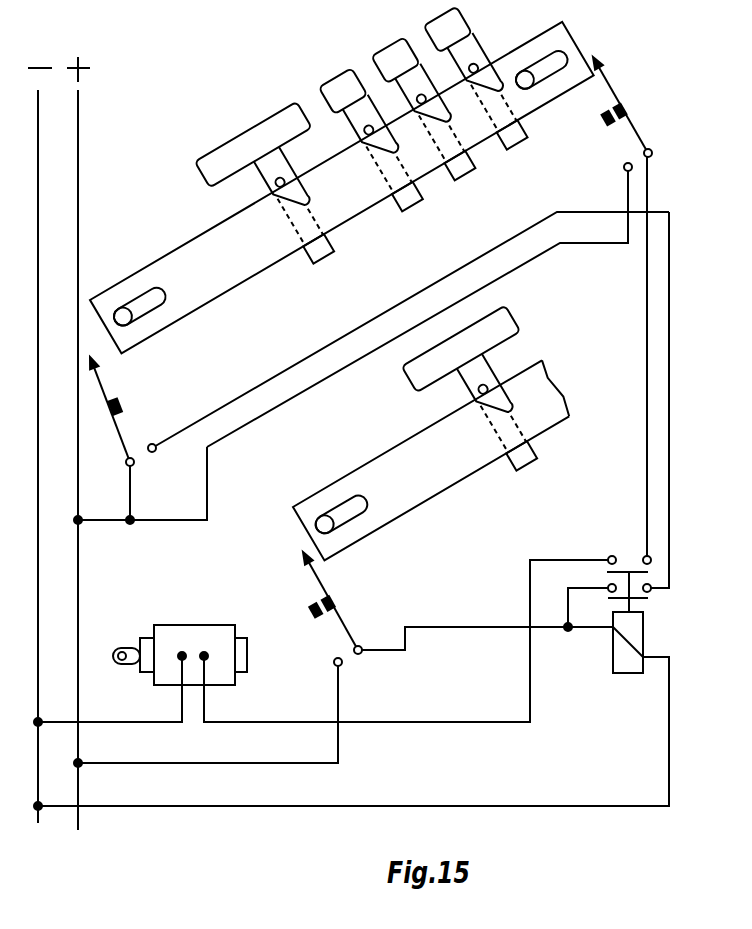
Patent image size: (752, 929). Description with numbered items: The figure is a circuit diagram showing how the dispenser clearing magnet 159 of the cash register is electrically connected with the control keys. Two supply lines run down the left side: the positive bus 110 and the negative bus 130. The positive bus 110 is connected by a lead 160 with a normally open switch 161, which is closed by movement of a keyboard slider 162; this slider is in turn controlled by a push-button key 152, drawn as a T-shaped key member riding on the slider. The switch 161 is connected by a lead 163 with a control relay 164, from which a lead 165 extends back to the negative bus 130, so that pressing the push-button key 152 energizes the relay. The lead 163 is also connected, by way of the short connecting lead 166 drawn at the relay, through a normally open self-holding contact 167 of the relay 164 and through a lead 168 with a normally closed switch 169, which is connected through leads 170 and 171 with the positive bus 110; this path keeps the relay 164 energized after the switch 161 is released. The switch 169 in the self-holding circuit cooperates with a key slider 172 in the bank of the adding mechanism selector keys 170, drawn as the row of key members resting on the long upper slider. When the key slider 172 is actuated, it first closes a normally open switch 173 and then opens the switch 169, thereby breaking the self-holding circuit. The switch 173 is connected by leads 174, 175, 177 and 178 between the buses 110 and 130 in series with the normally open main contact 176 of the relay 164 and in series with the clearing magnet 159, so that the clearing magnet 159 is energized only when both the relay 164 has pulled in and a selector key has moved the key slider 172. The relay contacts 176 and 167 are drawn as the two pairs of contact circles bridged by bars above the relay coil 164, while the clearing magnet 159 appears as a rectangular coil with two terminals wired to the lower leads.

The positive bus 110 is at (78, 119).
The negative bus 130 is at (38, 167).
The adding mechanism selector keys 170 is at (385, 62).
The key slider 172 is at (180, 266).
The lead 174 is at (336, 376).
The push-button key 152 is at (507, 325).
The keyboard slider 162 is at (388, 468).
The normally open switch 173 is at (630, 143).
The normally closed switch 169 is at (133, 432).
The lead 171 is at (110, 522).
The lead 175 is at (647, 355).
The lead 168 is at (667, 465).
The main contact 176 is at (628, 563).
The conductor 166 is at (567, 608).
The normally open switch 161 is at (340, 633).
The lead 163 is at (457, 628).
The self-holding contact 167 is at (625, 589).
The control relay 164 is at (622, 664).
The clearing magnet 159 is at (205, 628).
The lead 178 is at (112, 720).
The lead 177 is at (280, 720).
The lead 165 is at (490, 805).
The lead 160 is at (198, 765).